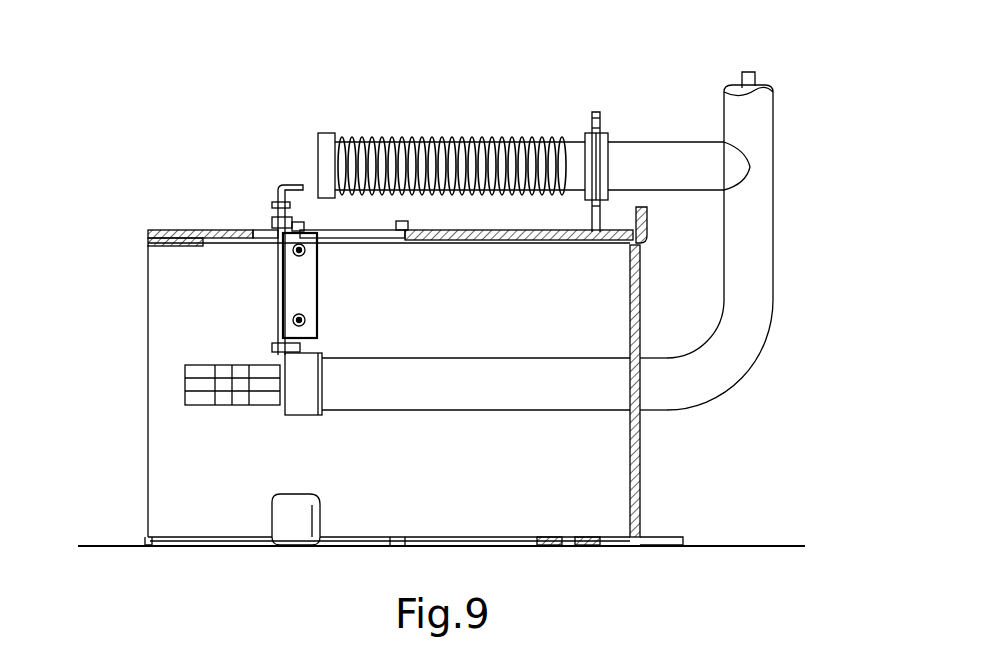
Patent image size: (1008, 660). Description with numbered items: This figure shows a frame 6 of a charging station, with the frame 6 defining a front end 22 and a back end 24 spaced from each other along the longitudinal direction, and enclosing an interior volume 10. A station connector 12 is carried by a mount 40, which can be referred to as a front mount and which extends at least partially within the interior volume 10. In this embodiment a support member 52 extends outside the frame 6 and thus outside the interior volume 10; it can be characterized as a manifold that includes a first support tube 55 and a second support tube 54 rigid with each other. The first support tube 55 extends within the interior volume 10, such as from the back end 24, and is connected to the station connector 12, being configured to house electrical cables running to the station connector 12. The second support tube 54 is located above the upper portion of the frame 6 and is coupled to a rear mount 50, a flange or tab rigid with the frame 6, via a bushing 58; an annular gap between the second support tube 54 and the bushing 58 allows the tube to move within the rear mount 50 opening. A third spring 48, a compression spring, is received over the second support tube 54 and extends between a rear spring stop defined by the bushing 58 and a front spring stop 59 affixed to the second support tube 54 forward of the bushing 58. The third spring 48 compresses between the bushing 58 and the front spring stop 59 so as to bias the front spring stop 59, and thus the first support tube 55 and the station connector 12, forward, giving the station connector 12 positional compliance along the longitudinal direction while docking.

The frame 6 is at (140, 158).
The interior volume 10 is at (183, 485).
The station connector 12 is at (205, 395).
The front end 22 is at (147, 315).
The back end 24 is at (641, 440).
The mount 40 is at (277, 264).
The third spring 48 is at (447, 142).
The rear mount 50 is at (601, 216).
The support member 52 is at (773, 128).
The second support tube 54 is at (663, 160).
The first support tube 55 is at (493, 394).
The bushing 58 is at (586, 134).
The front spring stop 59 is at (325, 150).